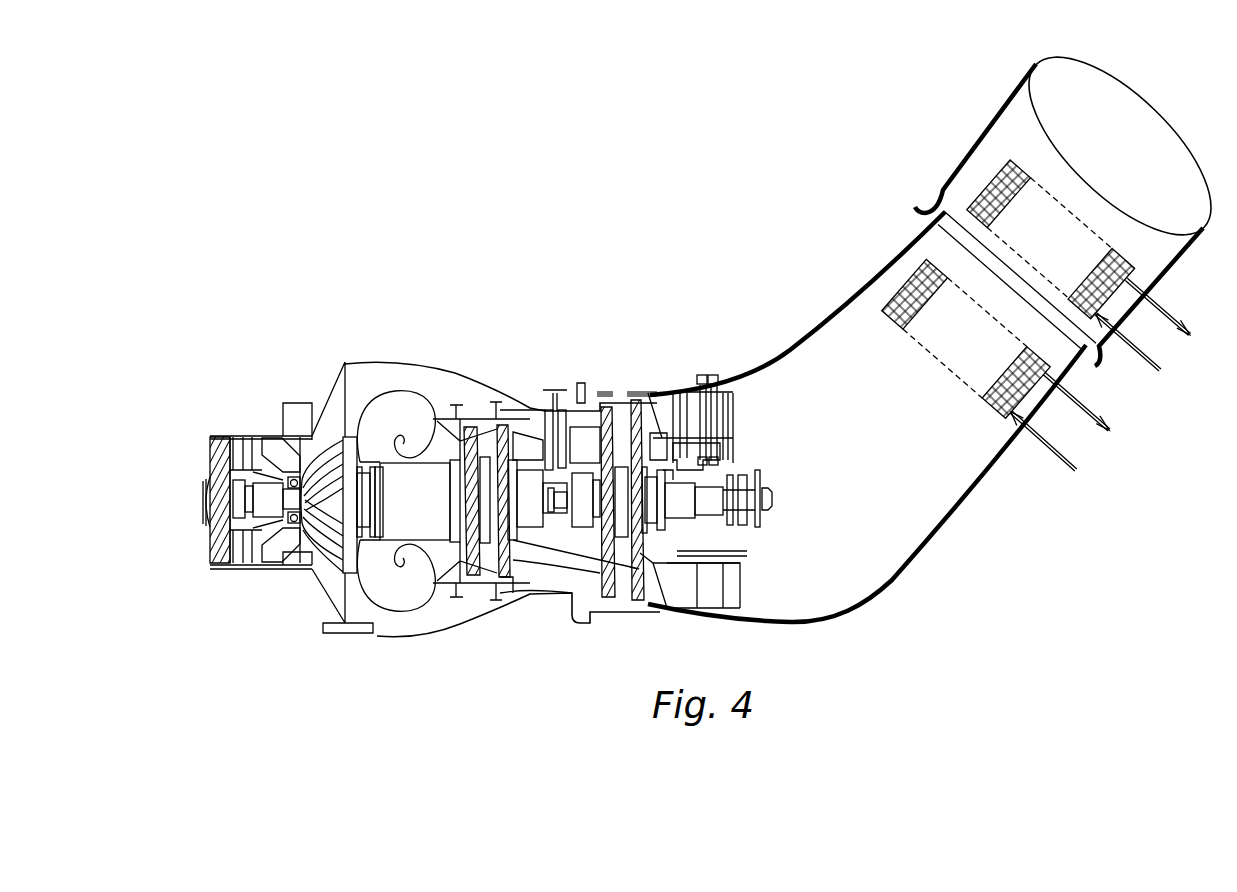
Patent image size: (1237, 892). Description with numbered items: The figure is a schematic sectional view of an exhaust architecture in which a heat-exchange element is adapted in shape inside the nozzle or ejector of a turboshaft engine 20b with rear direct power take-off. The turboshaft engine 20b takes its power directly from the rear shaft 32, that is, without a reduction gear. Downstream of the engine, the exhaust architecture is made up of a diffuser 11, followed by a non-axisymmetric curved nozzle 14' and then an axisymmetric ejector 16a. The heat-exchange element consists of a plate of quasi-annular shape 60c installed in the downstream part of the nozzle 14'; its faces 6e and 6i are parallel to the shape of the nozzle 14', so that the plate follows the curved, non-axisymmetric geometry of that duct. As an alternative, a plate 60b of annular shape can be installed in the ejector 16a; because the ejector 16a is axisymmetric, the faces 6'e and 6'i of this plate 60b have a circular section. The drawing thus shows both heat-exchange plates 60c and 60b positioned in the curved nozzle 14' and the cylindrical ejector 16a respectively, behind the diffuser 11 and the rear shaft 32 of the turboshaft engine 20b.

The turboshaft engine 20b is at (723, 356).
The rear shaft 32 is at (739, 469).
The diffuser 11 is at (681, 592).
The non-axisymmetric curved nozzle 14' is at (872, 427).
The axisymmetric ejector 16a is at (1017, 88).
The face of annular plate 6'e is at (999, 151).
The face of annular plate 6'i is at (1129, 278).
The face of quasi-annular plate 6e is at (888, 298).
The face of quasi-annular plate 6i is at (993, 378).
The annular plate 60b is at (980, 187).
The quasi-annular plate 60c is at (903, 280).